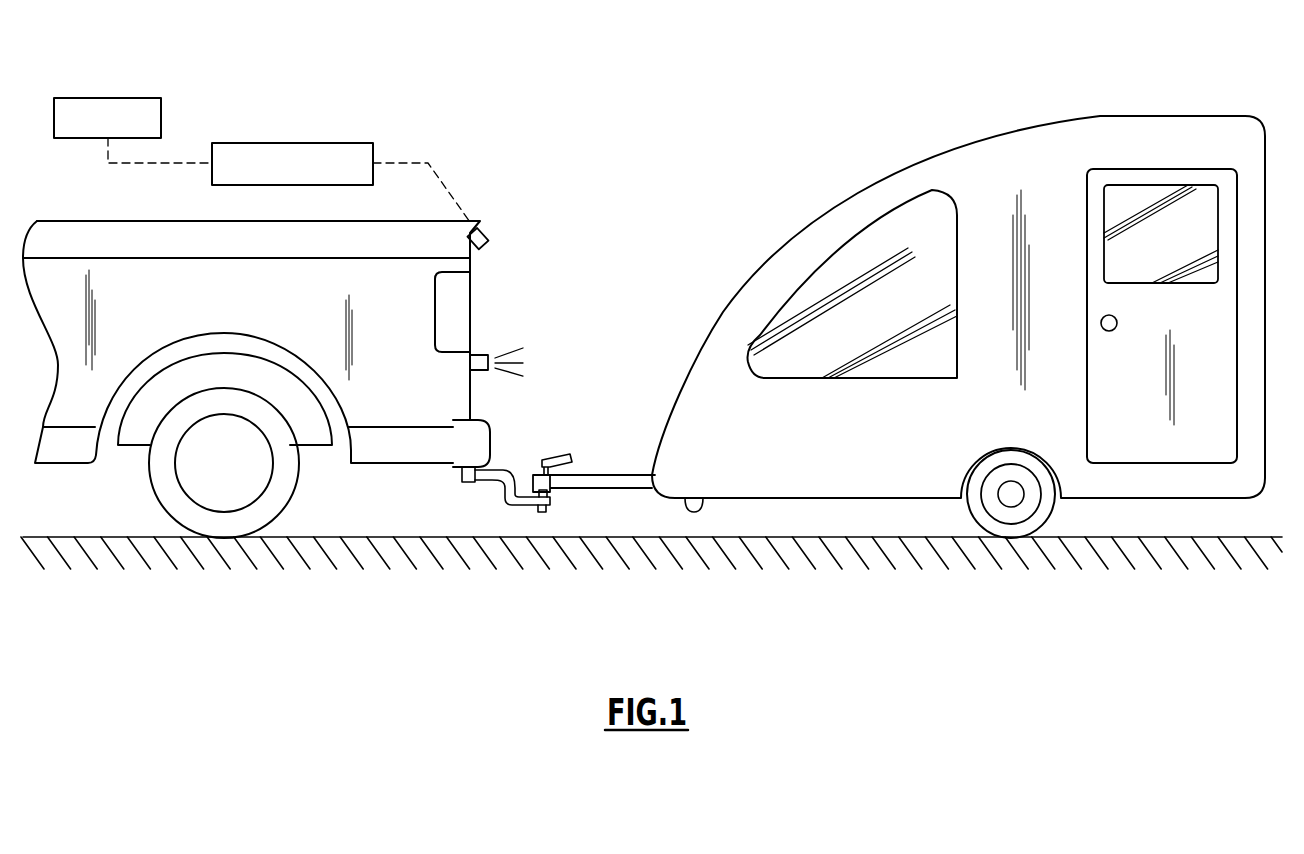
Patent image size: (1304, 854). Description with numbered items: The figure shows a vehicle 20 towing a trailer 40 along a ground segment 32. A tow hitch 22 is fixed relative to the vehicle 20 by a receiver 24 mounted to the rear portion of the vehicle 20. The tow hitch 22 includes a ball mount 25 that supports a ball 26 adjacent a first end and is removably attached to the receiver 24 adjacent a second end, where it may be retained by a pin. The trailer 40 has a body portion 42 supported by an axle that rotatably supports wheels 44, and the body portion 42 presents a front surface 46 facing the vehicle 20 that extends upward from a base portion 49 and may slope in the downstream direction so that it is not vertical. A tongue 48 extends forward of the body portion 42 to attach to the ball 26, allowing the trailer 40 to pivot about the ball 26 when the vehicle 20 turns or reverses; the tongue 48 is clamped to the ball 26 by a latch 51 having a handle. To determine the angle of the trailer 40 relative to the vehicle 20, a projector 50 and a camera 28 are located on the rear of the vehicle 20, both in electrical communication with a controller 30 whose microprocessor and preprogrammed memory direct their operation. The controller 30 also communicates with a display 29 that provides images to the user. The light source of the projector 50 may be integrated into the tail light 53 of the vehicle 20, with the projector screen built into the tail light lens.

The vehicle 20 is at (514, 180).
The tow hitch 22 is at (510, 478).
The receiver 24 is at (462, 477).
The ball mount 25 is at (503, 488).
The ball 26 is at (548, 490).
The camera 28 is at (485, 235).
The display 29 is at (93, 98).
The controller 30 is at (253, 143).
The ground segment 32 is at (622, 537).
The trailer 40 is at (890, 285).
The body portion 42 is at (1047, 118).
The wheels 44 is at (1047, 505).
The front surface 46 is at (722, 312).
The tongue 48 is at (617, 476).
The base portion 49 is at (703, 498).
The projector 50 is at (490, 352).
The latch 51 is at (552, 452).
The tail light 53 is at (452, 300).